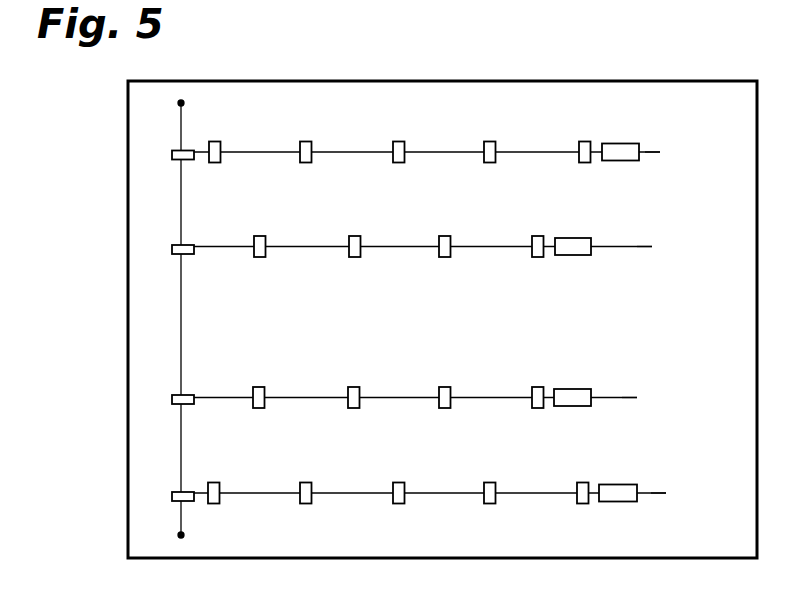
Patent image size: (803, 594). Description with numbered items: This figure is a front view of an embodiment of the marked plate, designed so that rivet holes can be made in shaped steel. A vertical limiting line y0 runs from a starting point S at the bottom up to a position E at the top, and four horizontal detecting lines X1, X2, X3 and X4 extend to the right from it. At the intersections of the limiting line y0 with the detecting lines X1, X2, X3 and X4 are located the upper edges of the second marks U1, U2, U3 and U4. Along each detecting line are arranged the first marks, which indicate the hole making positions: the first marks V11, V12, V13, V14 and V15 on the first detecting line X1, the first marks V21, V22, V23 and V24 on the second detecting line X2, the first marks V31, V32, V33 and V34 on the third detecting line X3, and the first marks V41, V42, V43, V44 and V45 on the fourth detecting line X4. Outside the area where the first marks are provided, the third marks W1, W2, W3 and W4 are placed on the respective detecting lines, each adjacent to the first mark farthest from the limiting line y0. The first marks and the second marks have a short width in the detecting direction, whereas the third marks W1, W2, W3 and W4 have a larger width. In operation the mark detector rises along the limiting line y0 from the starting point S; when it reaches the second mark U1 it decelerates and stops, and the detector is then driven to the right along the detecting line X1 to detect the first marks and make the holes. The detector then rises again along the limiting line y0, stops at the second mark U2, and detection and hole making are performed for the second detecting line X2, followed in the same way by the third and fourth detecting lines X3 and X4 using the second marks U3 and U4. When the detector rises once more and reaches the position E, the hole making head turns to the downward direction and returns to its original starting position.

The position E is at (167, 106).
The starting point S is at (194, 538).
The limiting line y0 is at (168, 319).
The second mark U1 is at (164, 499).
The second mark U2 is at (164, 406).
The second mark U3 is at (164, 253).
The second mark U4 is at (164, 158).
The first mark V11 is at (220, 476).
The first mark V12 is at (314, 476).
The first mark V13 is at (407, 478).
The first mark V14 is at (502, 478).
The first mark V15 is at (590, 478).
The first mark V21 is at (265, 380).
The first mark V22 is at (360, 380).
The first mark V23 is at (454, 383).
The first mark V24 is at (544, 383).
The first mark V31 is at (265, 228).
The first mark V32 is at (359, 230).
The first mark V33 is at (454, 231).
The first mark V34 is at (544, 231).
The first mark V41 is at (231, 135).
The first mark V42 is at (317, 135).
The first mark V43 is at (410, 137).
The first mark V44 is at (504, 137).
The first mark V45 is at (585, 137).
The third mark W1 is at (626, 478).
The third mark W2 is at (582, 382).
The third mark W3 is at (584, 230).
The third mark W4 is at (626, 136).
The detecting line X1 is at (677, 488).
The detecting line X2 is at (650, 384).
The detecting line X3 is at (661, 236).
The detecting line X4 is at (671, 144).